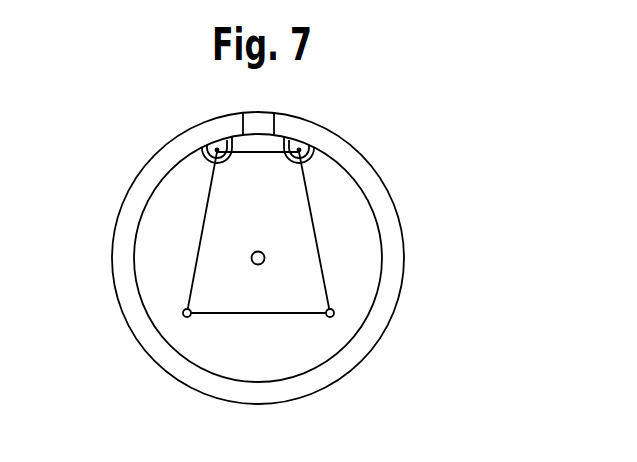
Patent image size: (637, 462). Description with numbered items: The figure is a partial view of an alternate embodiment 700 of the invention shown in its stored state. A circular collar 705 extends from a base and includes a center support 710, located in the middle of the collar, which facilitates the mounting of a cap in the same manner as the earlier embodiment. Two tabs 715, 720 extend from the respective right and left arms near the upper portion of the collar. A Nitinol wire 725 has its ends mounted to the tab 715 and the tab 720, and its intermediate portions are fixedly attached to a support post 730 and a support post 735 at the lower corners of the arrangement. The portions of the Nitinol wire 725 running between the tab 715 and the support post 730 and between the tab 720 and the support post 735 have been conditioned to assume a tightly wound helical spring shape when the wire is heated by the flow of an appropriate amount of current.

The alternate embodiment 700 is at (421, 140).
The circular collar 705 is at (392, 196).
The center support 710 is at (265, 258).
The tab 715 is at (197, 160).
The tab 720 is at (314, 157).
The Nitinol wire 725 is at (201, 233).
The support post 730 is at (183, 318).
The support post 735 is at (335, 313).